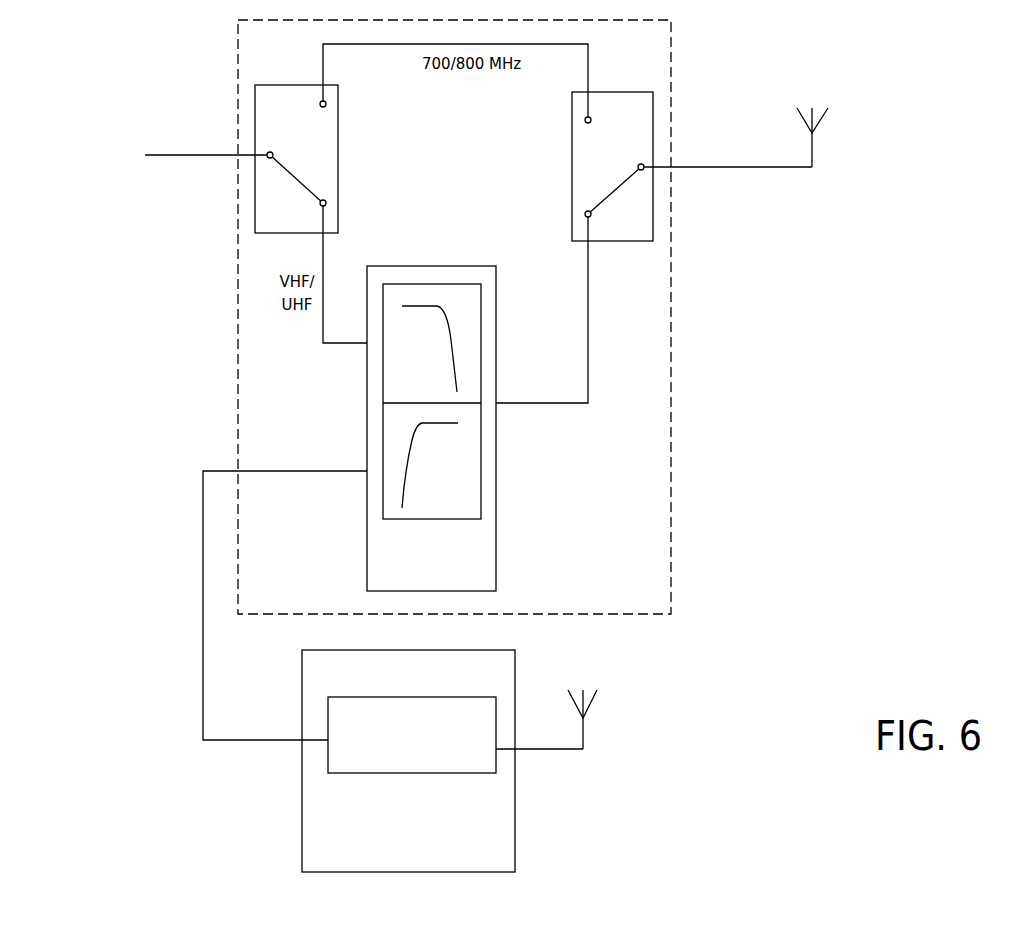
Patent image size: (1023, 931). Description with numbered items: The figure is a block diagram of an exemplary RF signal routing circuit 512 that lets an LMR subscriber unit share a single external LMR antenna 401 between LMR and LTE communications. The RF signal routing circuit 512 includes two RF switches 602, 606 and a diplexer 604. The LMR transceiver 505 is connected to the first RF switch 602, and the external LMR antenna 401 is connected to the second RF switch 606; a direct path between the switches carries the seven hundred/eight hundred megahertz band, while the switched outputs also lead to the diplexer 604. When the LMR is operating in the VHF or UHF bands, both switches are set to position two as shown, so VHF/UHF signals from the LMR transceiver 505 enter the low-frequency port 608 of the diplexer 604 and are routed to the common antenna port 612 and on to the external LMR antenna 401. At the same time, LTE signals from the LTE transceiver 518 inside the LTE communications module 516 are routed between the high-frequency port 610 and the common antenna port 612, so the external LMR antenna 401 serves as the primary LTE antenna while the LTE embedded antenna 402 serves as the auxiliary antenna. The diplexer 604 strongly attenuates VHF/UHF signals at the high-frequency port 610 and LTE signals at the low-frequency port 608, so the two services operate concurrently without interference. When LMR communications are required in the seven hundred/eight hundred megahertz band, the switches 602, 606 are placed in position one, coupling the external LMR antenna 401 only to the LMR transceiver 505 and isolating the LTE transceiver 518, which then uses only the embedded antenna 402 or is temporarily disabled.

The RF signal routing circuit 512 is at (568, 565).
The RF switch 602 is at (297, 113).
The RF switch 606 is at (650, 113).
The diplexer 604 is at (418, 581).
The low-frequency port 608 is at (357, 347).
The high-frequency port 610 is at (357, 475).
The common antenna port 612 is at (512, 405).
The LMR transceiver 505 is at (154, 173).
The external LMR antenna 401 is at (812, 148).
The LTE embedded antenna 402 is at (583, 736).
The LTE communications module 516 is at (396, 867).
The LTE transceiver 518 is at (399, 743).